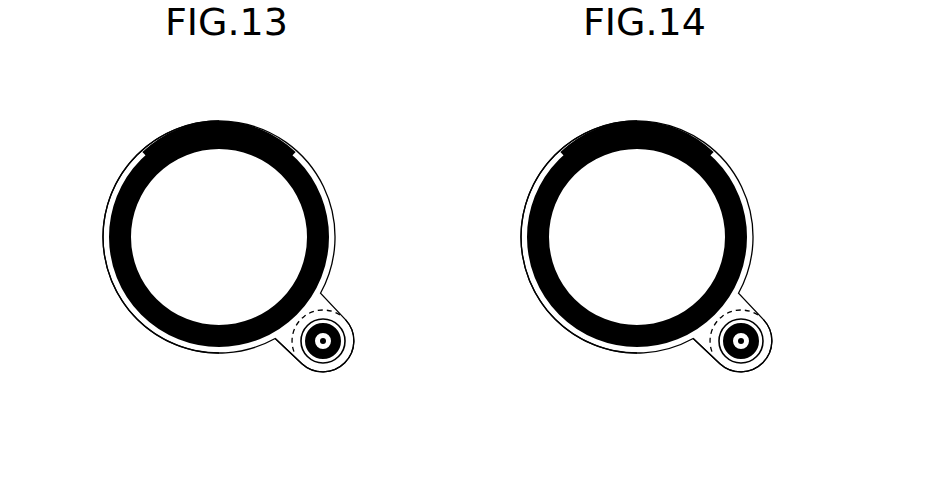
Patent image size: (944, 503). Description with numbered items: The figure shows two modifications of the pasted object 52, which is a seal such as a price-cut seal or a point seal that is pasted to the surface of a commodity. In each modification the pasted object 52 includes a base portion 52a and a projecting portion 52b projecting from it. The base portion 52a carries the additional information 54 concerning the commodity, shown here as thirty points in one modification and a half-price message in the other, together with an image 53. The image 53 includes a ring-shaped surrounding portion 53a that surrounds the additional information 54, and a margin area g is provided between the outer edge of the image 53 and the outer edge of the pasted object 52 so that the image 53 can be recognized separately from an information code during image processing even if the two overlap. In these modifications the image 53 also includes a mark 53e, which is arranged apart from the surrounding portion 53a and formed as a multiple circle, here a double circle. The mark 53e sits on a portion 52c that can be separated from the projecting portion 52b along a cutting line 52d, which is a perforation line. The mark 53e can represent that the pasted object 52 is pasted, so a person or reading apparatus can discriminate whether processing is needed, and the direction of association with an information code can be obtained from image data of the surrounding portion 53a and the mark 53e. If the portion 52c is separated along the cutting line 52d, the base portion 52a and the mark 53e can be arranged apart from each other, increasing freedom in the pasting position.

In FIG. 13, the pasted object 52 is at (259, 121).
In FIG. 14, the pasted object 52 is at (646, 225).
In FIG. 13, the base portion 52a is at (163, 340).
In FIG. 14, the base portion 52a is at (579, 322).
In FIG. 13, the projecting portion 52b is at (283, 349).
In FIG. 14, the projecting portion 52b is at (678, 367).
In FIG. 13, the portion affixed with the mark 52c is at (349, 364).
In FIG. 14, the portion affixed with the mark 52c is at (774, 362).
In FIG. 13, the cutting line 52d is at (332, 297).
In FIG. 14, the cutting line 52d is at (781, 317).
In FIG. 13, the image 53 is at (118, 184).
In FIG. 14, the image 53 is at (599, 237).
In FIG. 13, the surrounding portion 53a is at (217, 128).
In FIG. 14, the surrounding portion 53a is at (637, 115).
In FIG. 13, the mark 53e is at (313, 364).
In FIG. 14, the mark 53e is at (731, 376).
In FIG. 13, the additional information 54 is at (153, 230).
In FIG. 14, the additional information 54 is at (577, 228).
In FIG. 13, the margin area g is at (143, 150).
In FIG. 14, the margin area g is at (579, 166).